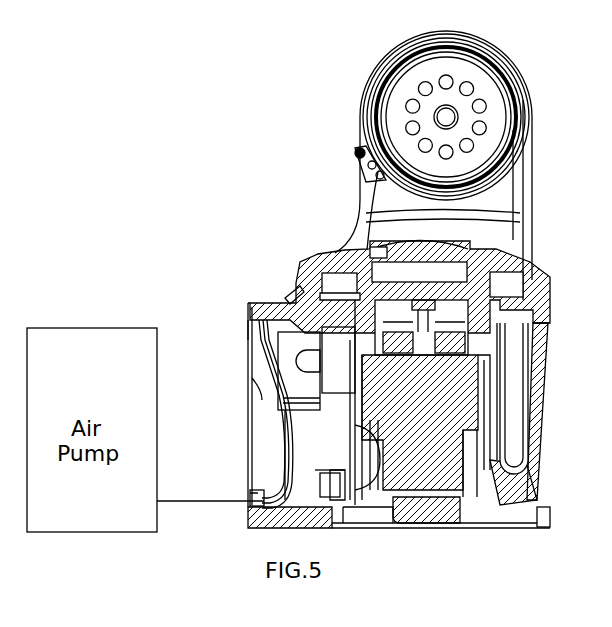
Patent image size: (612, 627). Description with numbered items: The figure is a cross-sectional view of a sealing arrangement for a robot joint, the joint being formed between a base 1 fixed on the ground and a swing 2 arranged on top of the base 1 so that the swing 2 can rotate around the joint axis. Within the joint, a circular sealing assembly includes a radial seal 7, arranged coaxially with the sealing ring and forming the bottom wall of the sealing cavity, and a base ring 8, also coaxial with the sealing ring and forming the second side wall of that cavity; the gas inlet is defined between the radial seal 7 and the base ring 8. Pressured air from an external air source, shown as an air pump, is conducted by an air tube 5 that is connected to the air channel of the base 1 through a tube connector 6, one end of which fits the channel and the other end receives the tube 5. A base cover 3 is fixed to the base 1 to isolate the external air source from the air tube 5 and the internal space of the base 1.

The base 1 is at (254, 303).
The swing 2 is at (350, 255).
The base cover 3 is at (248, 332).
The air tube 5 is at (270, 373).
The tube connector 6 is at (252, 484).
The radial seal 7 is at (310, 292).
The base ring 8 is at (285, 298).